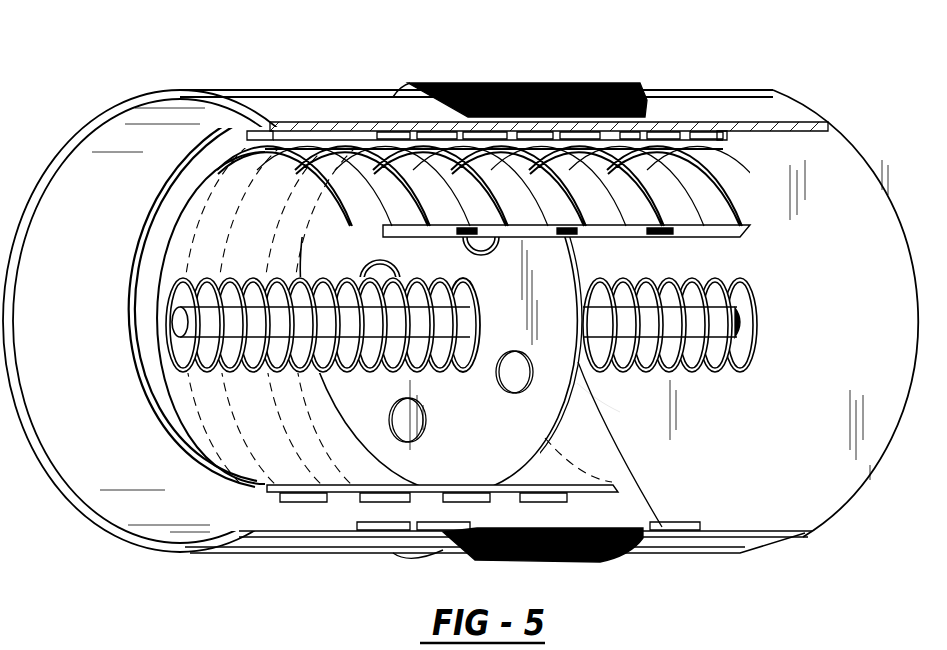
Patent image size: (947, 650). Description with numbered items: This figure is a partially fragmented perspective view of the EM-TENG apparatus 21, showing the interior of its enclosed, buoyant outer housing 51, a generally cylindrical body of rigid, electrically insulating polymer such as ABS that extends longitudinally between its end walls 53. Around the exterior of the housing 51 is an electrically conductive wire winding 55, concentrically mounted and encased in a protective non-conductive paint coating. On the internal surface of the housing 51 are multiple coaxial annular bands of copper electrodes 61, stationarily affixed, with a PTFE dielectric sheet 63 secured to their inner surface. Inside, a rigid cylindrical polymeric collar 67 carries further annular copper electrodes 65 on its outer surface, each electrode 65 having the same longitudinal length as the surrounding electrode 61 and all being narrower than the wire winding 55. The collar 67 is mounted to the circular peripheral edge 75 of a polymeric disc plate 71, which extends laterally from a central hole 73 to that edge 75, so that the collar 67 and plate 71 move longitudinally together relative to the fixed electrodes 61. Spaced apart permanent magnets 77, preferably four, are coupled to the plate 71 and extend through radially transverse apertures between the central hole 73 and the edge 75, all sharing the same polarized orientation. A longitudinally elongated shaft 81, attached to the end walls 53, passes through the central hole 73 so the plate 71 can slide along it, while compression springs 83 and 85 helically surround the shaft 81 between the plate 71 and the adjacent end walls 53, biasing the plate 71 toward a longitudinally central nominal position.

The EM-TENG apparatus 21 is at (43, 518).
The outer housing 51 is at (287, 108).
The end walls 53 is at (818, 487).
The wire winding 55 is at (545, 83).
The electrodes 61 is at (440, 125).
The dielectric sheet 63 is at (247, 140).
The electrodes 65 is at (680, 203).
The collar 67 is at (177, 400).
The plate 71 is at (526, 433).
The central hole 73 is at (463, 373).
The peripheral edge 75 is at (577, 383).
The permanent magnets 77 is at (405, 421).
The shaft 81 is at (177, 327).
The compression spring 83 is at (703, 280).
The compression spring 85 is at (240, 278).